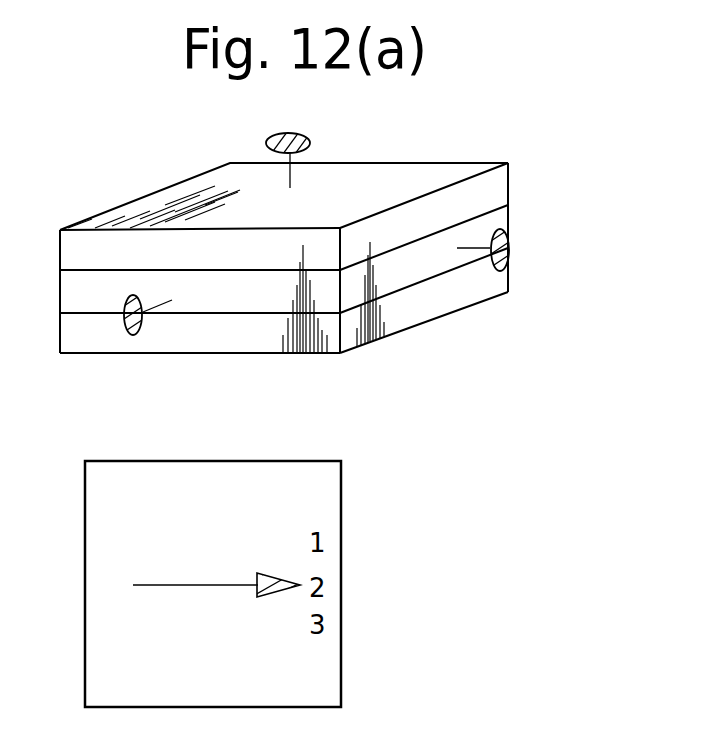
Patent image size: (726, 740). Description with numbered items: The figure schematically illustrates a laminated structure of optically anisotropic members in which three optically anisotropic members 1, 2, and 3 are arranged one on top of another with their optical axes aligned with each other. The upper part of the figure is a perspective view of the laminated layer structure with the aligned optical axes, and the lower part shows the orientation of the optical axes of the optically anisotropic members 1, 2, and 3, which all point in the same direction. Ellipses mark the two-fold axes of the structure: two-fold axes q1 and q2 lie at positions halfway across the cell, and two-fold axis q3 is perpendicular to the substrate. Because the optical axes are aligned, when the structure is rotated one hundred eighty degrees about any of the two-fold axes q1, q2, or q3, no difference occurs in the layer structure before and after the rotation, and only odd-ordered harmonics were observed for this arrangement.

The optically anisotropic member 1 is at (284, 198).
The optically anisotropic member 2 is at (284, 241).
The optically anisotropic member 3 is at (284, 282).
The two-fold axis q1 is at (140, 334).
The two-fold axis q2 is at (505, 268).
The two-fold axis q3 is at (311, 143).